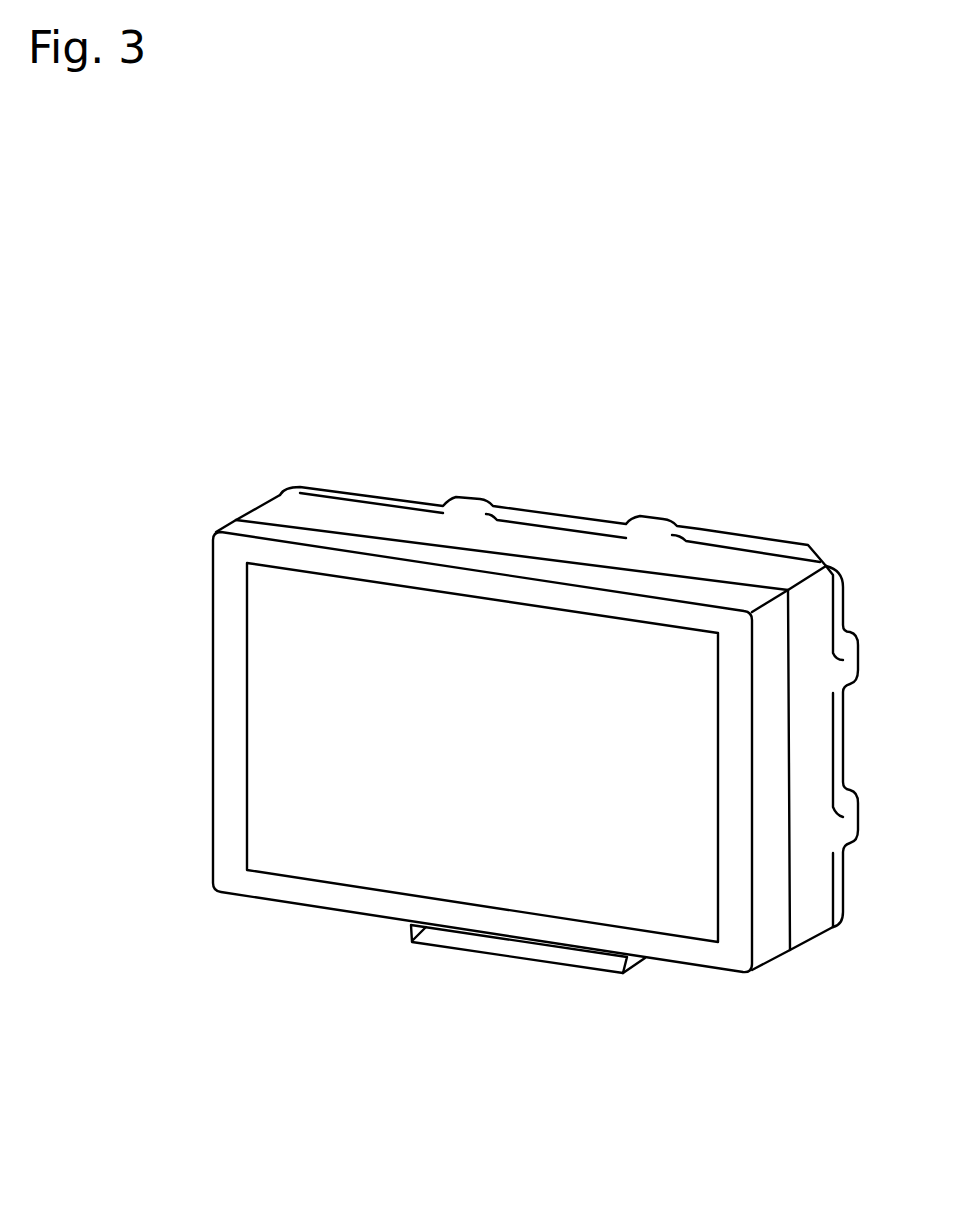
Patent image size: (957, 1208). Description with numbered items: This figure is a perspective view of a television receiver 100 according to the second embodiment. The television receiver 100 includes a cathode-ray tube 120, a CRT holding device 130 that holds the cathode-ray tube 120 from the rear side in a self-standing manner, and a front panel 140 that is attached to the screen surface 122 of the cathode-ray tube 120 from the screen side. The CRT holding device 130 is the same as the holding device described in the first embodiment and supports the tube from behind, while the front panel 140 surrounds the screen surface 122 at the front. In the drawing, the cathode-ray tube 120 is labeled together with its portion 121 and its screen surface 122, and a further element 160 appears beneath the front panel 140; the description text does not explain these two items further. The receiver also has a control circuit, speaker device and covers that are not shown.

The television receiver 100 is at (578, 277).
The cathode-ray tube 120 is at (513, 373).
The rail / tab portion 121 is at (412, 497).
The screen surface 122 is at (343, 617).
The CRT holding device 130 is at (277, 512).
The front panel 140 is at (232, 521).
The connector 160 is at (540, 948).